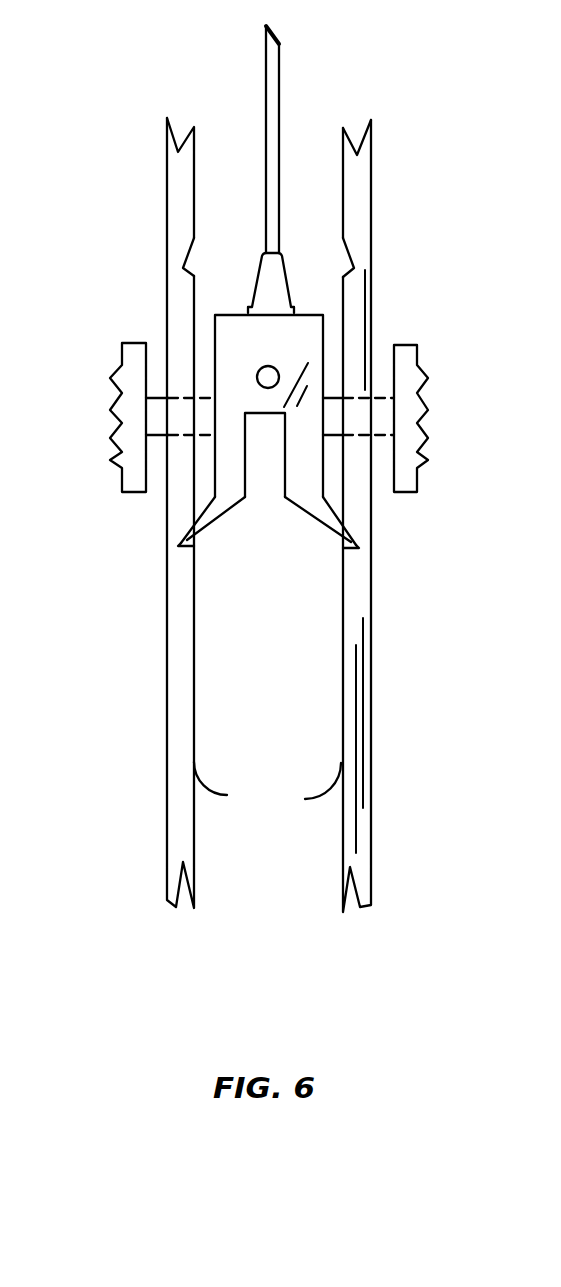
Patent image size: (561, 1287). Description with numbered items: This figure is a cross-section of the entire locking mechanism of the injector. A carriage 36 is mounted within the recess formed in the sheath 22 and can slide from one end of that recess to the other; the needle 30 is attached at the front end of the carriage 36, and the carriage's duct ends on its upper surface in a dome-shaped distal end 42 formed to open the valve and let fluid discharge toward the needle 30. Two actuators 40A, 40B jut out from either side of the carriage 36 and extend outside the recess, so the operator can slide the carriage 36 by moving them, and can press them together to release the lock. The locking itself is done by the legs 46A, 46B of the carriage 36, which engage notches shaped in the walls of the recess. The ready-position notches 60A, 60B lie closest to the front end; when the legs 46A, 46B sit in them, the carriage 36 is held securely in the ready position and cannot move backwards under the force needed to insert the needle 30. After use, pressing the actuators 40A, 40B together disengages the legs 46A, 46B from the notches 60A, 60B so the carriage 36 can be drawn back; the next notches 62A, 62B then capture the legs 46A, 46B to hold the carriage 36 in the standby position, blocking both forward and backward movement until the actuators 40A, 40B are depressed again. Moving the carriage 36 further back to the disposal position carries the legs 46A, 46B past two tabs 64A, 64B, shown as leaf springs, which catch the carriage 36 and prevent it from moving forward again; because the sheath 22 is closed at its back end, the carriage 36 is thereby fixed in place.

The sheath 22 is at (173, 692).
The needle 30 is at (262, 143).
The carriage 36 is at (280, 356).
The actuator 40A is at (130, 382).
The actuator 40B is at (408, 370).
The dome-shaped distal end 42 is at (257, 370).
The leg 46A is at (212, 512).
The leg 46B is at (323, 512).
The ready-position notch 60A is at (190, 252).
The ready-position notch 60B is at (352, 258).
The notch 62A is at (184, 540).
The notch 62B is at (356, 543).
The tab 64A is at (215, 780).
The tab 64B is at (322, 788).